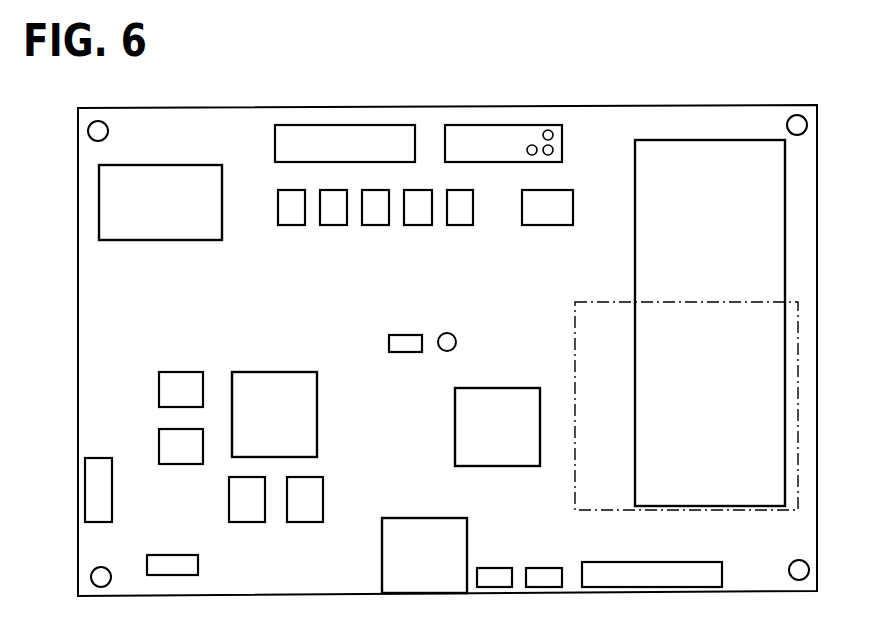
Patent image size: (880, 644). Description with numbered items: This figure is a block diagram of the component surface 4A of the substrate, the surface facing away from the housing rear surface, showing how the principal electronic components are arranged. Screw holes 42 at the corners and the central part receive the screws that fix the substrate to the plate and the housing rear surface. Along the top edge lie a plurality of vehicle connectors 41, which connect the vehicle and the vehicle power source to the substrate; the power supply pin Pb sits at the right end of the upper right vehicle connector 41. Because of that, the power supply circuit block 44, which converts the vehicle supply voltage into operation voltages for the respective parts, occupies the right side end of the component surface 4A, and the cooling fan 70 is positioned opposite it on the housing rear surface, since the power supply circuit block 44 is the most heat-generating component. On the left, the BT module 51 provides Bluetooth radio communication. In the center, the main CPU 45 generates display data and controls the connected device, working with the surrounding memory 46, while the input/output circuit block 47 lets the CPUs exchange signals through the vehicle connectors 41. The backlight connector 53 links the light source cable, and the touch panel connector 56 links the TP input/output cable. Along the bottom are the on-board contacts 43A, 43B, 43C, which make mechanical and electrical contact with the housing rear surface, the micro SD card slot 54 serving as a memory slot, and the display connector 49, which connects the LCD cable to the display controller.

The component surface 4A is at (170, 128).
The screw hole 42 is at (98, 121).
The vehicle connector 41 is at (366, 125).
The power supply pin Pb is at (549, 128).
The power supply circuit block 44 is at (786, 212).
The cooling fan 70 is at (800, 348).
The BT module 51 is at (178, 241).
The main CPU 45 is at (285, 372).
The memory 46 is at (169, 398).
The backlight connector 53 is at (103, 457).
The touch panel connector 56 is at (178, 555).
The on-board contact 43A is at (402, 354).
The input/output circuit block 47 is at (514, 388).
The micro SD card slot 54 is at (423, 518).
The on-board contact 43B is at (495, 567).
The on-board contact 43C is at (548, 567).
The display connector 49 is at (659, 562).